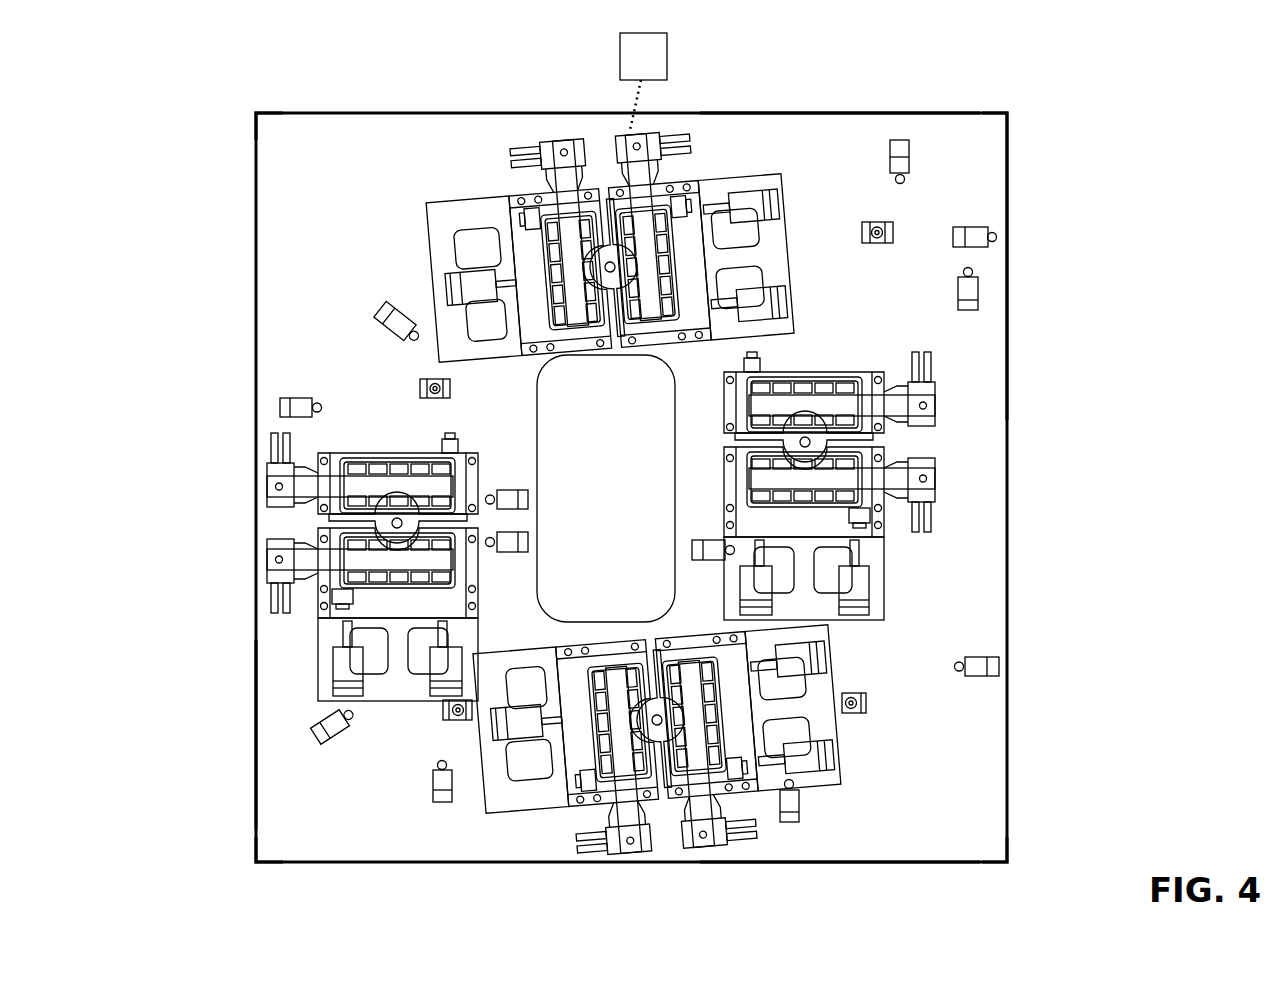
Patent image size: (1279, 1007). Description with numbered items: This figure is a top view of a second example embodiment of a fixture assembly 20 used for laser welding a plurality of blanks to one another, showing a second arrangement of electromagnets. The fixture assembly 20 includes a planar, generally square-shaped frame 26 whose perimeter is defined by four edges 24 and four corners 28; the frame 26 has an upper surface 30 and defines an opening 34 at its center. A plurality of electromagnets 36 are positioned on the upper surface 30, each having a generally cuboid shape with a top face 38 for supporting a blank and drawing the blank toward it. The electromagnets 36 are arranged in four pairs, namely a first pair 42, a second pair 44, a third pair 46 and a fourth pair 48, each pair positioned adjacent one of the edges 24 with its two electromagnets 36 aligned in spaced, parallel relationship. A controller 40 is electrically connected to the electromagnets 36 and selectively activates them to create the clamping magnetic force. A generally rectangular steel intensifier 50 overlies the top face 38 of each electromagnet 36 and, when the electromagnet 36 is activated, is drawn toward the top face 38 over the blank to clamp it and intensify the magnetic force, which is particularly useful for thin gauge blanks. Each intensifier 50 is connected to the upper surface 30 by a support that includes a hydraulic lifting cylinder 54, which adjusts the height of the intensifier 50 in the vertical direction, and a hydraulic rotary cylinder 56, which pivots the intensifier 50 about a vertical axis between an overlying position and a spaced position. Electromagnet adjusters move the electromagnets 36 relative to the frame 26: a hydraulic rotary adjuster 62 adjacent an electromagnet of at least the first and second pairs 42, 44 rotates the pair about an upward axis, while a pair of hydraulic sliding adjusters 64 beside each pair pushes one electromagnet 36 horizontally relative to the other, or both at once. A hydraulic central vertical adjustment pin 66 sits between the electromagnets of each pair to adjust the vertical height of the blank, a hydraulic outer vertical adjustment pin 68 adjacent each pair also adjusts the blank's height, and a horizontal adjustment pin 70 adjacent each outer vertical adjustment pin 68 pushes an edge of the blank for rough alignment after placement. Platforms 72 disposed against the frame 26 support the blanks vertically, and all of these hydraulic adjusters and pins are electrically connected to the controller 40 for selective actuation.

The fixture assembly 20 is at (1060, 145).
The edge 24 is at (860, 113).
The frame 26 is at (442, 110).
The corner 28 is at (256, 113).
The upper surface 30 is at (330, 452).
The opening 34 is at (593, 495).
The electromagnet 36 is at (535, 255).
The top face 38 is at (700, 240).
The controller 40 is at (656, 67).
The first pair 42 is at (232, 478).
The second pair 44 is at (1050, 505).
The third pair 46 is at (577, 104).
The fourth pair 48 is at (667, 870).
The intensifier 50 is at (400, 478).
The hydraulic lifting cylinder 54 is at (280, 547).
The hydraulic rotary cylinder 56 is at (665, 142).
The hydraulic rotary adjuster 62 is at (525, 738).
The hydraulic sliding adjuster 64 is at (790, 195).
The hydraulic central vertical adjustment pin 66 is at (400, 520).
The hydraulic outer vertical adjustment pin 68 is at (420, 390).
The horizontal adjustment pin 70 is at (292, 396).
The platform 72 is at (386, 306).